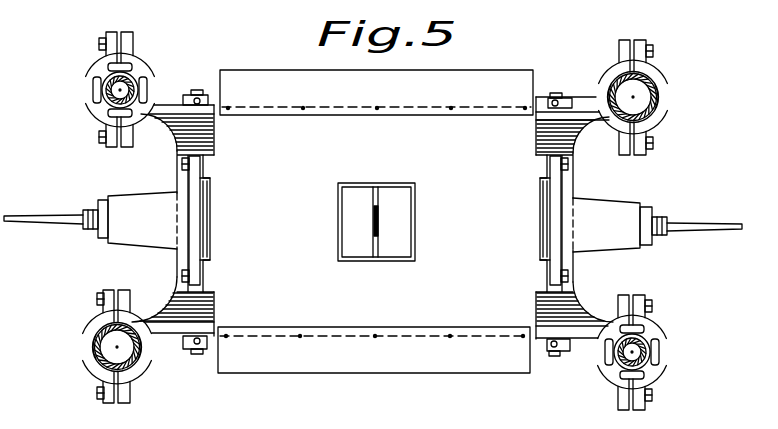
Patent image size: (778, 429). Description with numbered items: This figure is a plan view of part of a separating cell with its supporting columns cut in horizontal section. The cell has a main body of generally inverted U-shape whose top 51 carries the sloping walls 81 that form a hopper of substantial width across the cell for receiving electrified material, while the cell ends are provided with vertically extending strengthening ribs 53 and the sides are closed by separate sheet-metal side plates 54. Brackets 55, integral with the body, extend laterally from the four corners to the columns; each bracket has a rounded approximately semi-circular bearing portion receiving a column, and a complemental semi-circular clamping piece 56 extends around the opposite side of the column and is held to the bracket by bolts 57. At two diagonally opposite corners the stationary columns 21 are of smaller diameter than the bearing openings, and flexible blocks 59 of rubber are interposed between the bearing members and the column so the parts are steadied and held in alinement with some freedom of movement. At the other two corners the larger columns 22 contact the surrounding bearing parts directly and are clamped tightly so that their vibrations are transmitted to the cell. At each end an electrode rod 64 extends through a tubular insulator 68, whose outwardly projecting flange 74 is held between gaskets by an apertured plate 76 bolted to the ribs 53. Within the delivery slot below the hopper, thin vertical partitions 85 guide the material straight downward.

The stationary column 21 is at (110, 90).
The vibrated column 22 is at (656, 93).
The top 51 is at (375, 218).
The strengthening rib 53 is at (208, 278).
The side plate 54 is at (482, 76).
The bracket 55 is at (158, 101).
The clamping piece 56 is at (85, 355).
The bolt 57 is at (97, 299).
The block 59 is at (141, 84).
The rod 64 is at (34, 218).
The tubular insulator 68 is at (143, 203).
The flange 74 is at (205, 228).
The apertured plate 76 is at (195, 255).
The sloping wall 81 is at (417, 216).
The vertical partition 85 is at (373, 230).